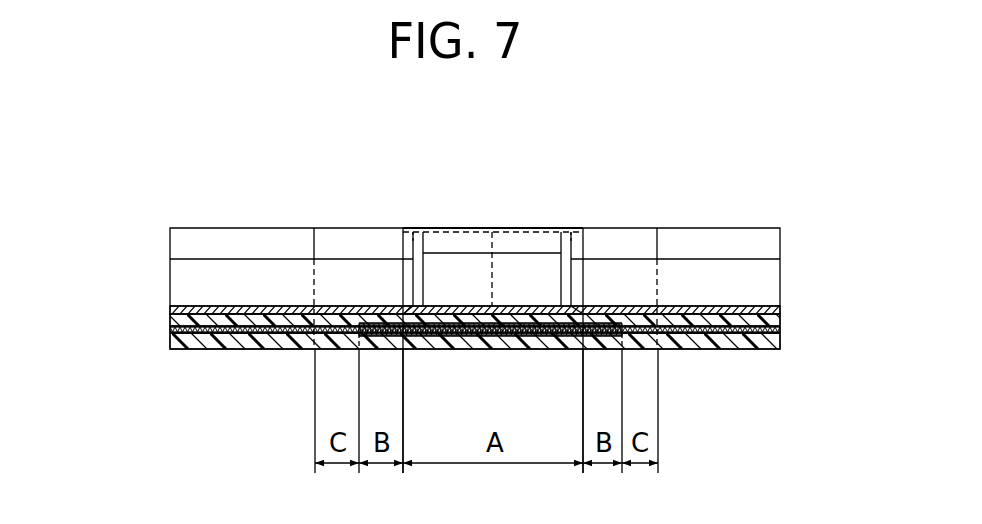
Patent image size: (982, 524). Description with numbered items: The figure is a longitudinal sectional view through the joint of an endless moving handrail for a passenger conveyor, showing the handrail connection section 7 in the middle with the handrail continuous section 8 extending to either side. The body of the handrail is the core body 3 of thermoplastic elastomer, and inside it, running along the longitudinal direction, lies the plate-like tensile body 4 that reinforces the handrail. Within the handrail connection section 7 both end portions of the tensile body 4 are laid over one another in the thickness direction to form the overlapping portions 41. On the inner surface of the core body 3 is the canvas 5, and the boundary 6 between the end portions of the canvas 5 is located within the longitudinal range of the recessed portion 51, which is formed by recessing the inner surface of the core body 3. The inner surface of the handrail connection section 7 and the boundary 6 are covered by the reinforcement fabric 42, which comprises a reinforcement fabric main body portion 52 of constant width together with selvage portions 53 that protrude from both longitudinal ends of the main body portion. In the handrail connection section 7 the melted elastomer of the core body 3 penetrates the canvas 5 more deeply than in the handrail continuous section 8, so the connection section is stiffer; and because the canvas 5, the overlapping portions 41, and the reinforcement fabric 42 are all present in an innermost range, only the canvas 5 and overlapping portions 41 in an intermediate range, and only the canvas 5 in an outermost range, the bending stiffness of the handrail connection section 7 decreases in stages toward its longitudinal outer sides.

The core body 3 is at (235, 343).
The tensile body 4 is at (172, 342).
The overlapping portions 41 is at (363, 320).
The canvas 5 is at (170, 309).
The recessed portion 51 is at (512, 306).
The reinforcement fabric main body portion 52 is at (437, 278).
The selvage portions 53 is at (403, 228).
The boundary 6 is at (497, 268).
The handrail connection section 7 is at (588, 227).
The handrail continuous section 8 is at (257, 228).
The reinforcement fabric 42 is at (560, 278).